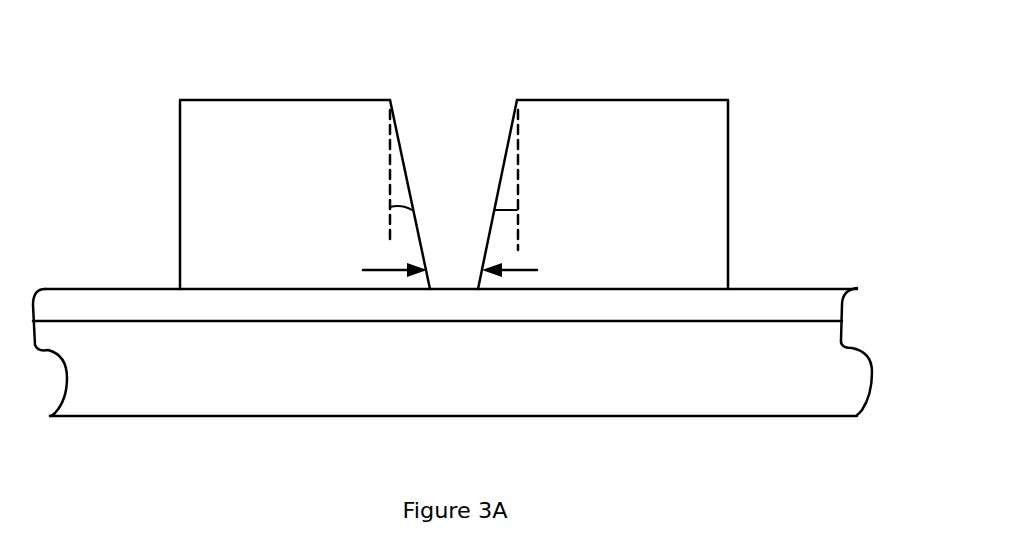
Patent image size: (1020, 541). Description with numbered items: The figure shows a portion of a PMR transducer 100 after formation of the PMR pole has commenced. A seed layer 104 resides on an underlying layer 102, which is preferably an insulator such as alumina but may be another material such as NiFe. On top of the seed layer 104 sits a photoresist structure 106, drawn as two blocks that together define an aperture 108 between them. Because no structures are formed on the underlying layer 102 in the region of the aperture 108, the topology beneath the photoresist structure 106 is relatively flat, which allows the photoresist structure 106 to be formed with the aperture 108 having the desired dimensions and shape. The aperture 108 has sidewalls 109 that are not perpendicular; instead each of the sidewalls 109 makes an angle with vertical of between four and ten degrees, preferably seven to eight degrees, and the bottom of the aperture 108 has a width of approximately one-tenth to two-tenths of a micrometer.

The PMR transducer 100 is at (433, 31).
The underlying layer 102 is at (557, 416).
The seed layer 104 is at (333, 322).
The photoresist structure 106 is at (273, 100).
The aperture 108 is at (388, 432).
The sidewalls 109 is at (410, 162).